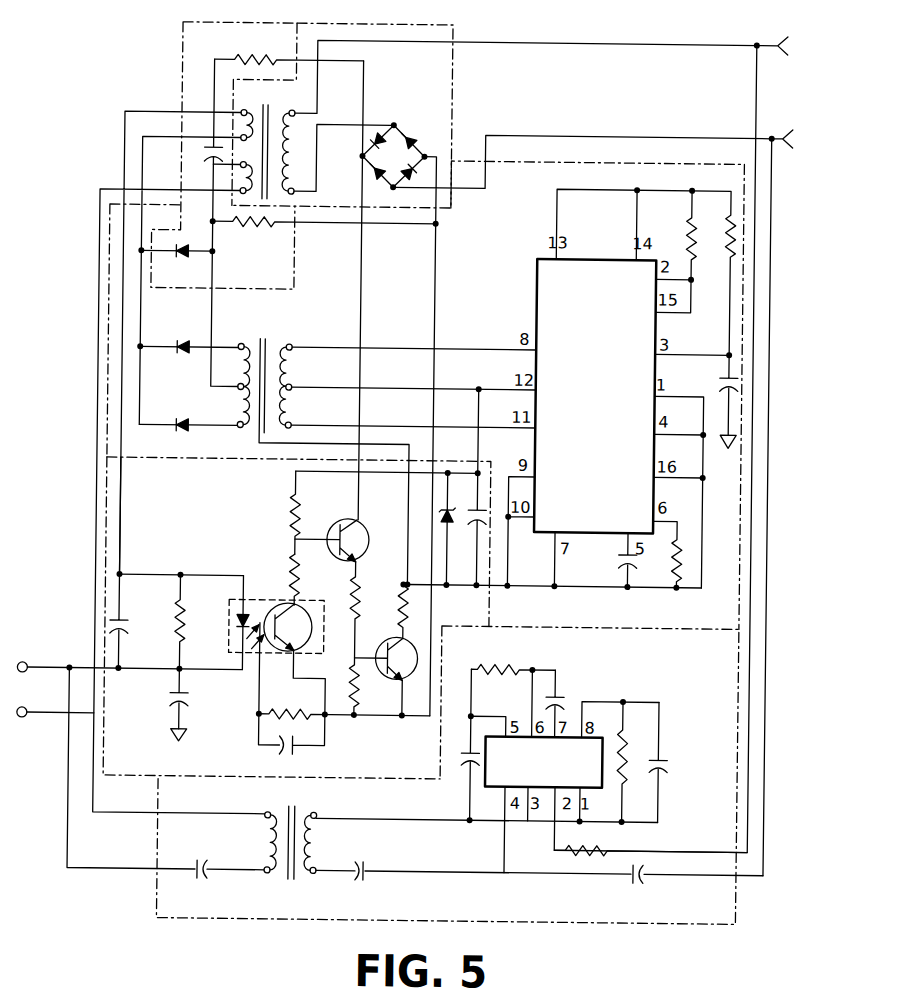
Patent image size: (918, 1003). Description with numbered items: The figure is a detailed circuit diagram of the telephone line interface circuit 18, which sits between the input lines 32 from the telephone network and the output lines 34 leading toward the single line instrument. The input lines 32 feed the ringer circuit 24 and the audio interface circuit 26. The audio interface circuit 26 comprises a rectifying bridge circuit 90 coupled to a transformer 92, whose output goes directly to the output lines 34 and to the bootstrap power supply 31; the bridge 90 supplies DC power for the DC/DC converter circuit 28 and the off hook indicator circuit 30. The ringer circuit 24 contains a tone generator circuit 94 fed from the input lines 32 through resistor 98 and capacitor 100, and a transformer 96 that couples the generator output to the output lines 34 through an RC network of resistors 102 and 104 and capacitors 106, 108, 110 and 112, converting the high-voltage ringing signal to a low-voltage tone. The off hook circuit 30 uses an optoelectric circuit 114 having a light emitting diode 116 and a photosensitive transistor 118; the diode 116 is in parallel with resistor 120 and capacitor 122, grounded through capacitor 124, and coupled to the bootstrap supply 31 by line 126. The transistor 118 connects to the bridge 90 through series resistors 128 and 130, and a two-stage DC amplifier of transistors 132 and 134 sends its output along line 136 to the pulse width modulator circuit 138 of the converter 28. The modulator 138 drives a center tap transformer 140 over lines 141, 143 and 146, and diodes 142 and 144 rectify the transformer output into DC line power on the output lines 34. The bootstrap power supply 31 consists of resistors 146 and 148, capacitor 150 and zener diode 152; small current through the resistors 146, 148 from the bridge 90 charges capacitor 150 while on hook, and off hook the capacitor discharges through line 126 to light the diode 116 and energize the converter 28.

The telephone line interface circuit 18 is at (551, 955).
The ringer circuit 24 is at (276, 905).
The audio interface circuit 26 is at (428, 76).
The DC/DC converter circuit 28 is at (537, 173).
The off hook indicator circuit 30 is at (108, 749).
The bootstrap power supply 31 is at (178, 103).
The input lines 32 is at (708, 46).
The output lines 34 is at (40, 676).
The rectifying bridge circuit 90 is at (399, 126).
The transformer 92 is at (279, 151).
The tone generator circuit 94 is at (492, 791).
The transformer 96 is at (322, 842).
The resistor 98 is at (613, 851).
The capacitor 100 is at (646, 882).
The resistor 102 is at (497, 668).
The resistor 104 is at (628, 745).
The capacitor 106 is at (474, 758).
The capacitor 108 is at (564, 698).
The capacitor 110 is at (663, 758).
The capacitor 112 is at (370, 872).
The optoelectric circuit 114 is at (257, 664).
The light emitting diode 116 is at (236, 632).
The photosensitive transistor 118 is at (278, 606).
The resistor 120 is at (188, 614).
The capacitor 122 is at (128, 618).
The capacitor 124 is at (174, 697).
The line 126 is at (123, 490).
The resistor 128 is at (293, 506).
The resistor 130 is at (297, 581).
The transistor 132 is at (372, 556).
The transistor 134 is at (386, 642).
The line 136 is at (528, 588).
The pulse width modulator circuit 138 is at (535, 318).
The center tap transformer 140 is at (288, 382).
The line 141 is at (375, 348).
The diode 142 is at (174, 360).
The line 143 is at (375, 390).
The diode 144 is at (184, 434).
The resistor 146 is at (248, 62).
The resistor 148 is at (243, 231).
The capacitor 150 is at (203, 165).
The zener diode 152 is at (186, 264).